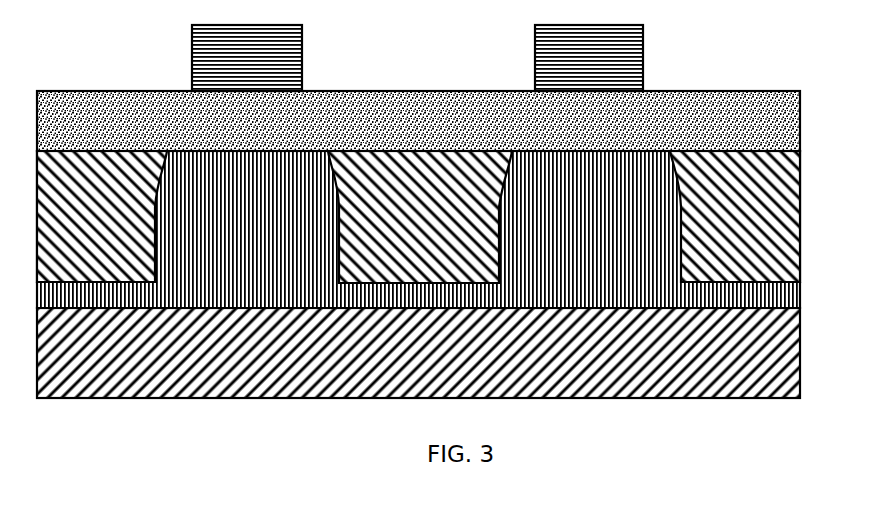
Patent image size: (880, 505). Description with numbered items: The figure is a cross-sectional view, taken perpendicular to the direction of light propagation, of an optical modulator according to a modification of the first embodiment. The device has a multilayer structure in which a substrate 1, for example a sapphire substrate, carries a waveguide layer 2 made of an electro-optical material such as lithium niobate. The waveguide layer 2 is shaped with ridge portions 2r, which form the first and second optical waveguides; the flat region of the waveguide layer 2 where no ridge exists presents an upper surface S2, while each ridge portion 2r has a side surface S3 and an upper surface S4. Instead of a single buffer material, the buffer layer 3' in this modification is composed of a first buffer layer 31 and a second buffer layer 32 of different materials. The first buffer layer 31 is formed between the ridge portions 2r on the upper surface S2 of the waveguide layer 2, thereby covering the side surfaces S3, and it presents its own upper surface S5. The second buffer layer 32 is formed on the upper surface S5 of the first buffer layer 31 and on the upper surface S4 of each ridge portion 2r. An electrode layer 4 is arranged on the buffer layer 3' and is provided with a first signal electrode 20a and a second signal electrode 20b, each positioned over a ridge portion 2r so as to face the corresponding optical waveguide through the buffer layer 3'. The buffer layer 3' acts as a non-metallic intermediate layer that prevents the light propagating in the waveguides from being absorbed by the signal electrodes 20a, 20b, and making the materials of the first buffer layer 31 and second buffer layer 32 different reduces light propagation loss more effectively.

The substrate 1 is at (793, 366).
The waveguide layer 2 is at (790, 295).
The ridge portion 2r is at (303, 208).
The buffer layer 3' is at (443, 216).
The first buffer layer 31 is at (780, 187).
The second buffer layer 32 is at (783, 127).
The electrode layer 4 is at (472, 52).
The first signal electrode 20a is at (283, 58).
The second signal electrode 20b is at (630, 58).
The upper surface of waveguide layer S2 is at (765, 280).
The side surface of ridge portion S3 is at (340, 237).
The upper surface of ridge portion S4 is at (207, 150).
The upper surface of first buffer layer S5 is at (108, 150).